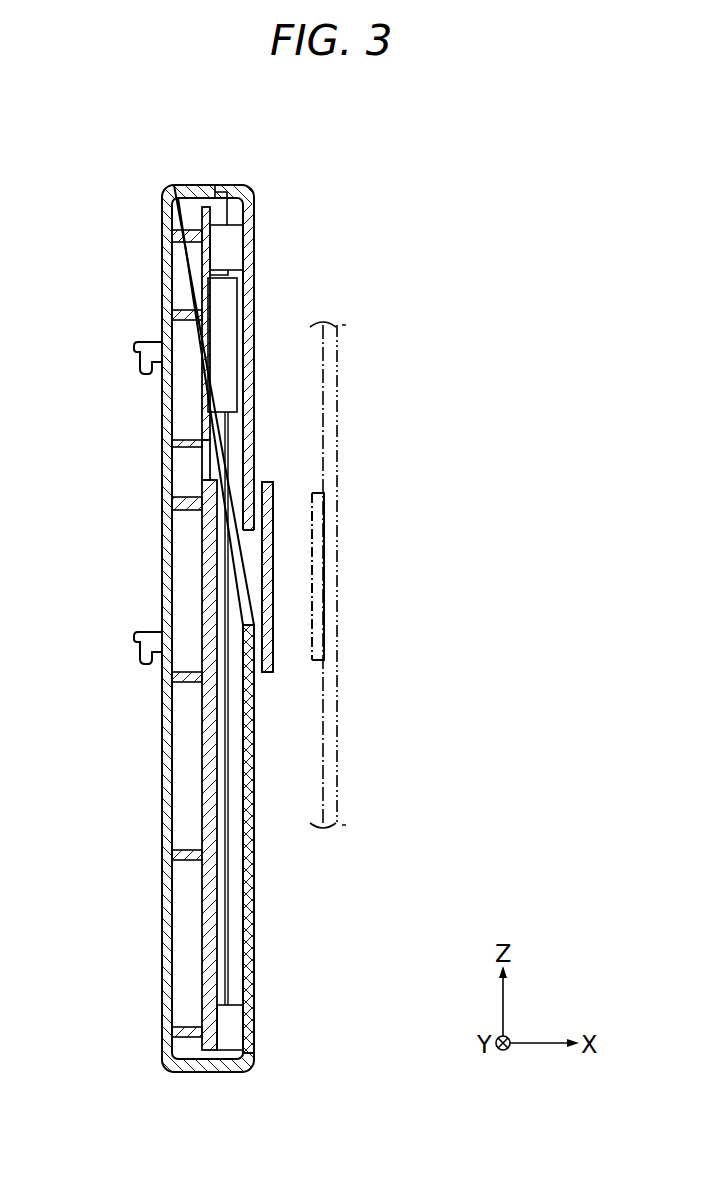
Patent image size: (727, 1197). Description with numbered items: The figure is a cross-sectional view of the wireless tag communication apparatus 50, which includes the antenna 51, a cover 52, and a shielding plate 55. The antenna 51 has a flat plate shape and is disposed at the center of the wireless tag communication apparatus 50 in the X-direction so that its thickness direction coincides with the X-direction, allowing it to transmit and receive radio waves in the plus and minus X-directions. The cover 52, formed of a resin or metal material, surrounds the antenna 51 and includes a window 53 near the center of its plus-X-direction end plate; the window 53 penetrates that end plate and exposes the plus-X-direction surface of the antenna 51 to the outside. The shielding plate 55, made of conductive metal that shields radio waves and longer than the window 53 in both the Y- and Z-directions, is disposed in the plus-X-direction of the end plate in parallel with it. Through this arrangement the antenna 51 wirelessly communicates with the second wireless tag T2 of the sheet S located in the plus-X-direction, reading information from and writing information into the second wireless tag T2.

The wireless tag communication apparatus 50 is at (268, 172).
The antenna 51 is at (220, 556).
The cover 52 is at (255, 837).
The window 53 is at (248, 622).
The shielding plate 55 is at (273, 508).
The second wireless tag T2 is at (312, 658).
The sheet S is at (338, 697).